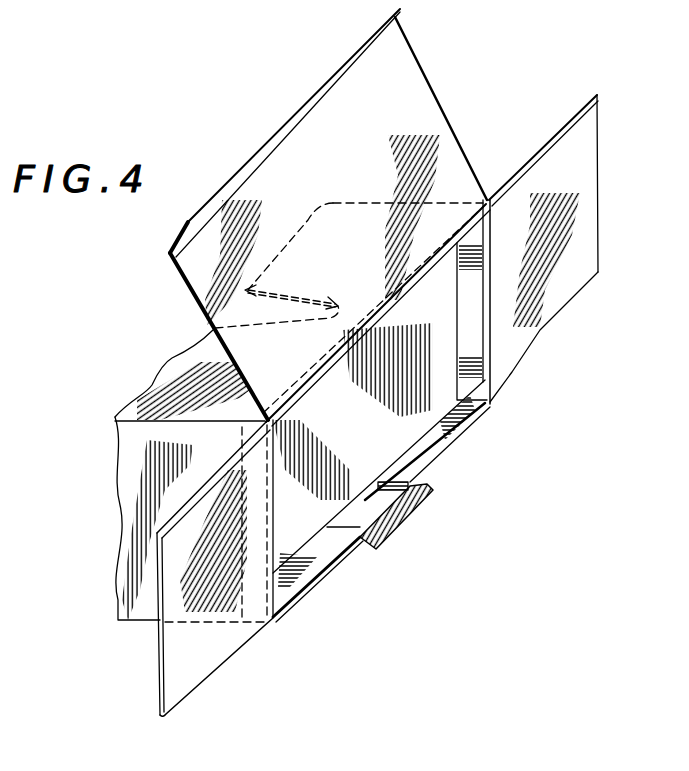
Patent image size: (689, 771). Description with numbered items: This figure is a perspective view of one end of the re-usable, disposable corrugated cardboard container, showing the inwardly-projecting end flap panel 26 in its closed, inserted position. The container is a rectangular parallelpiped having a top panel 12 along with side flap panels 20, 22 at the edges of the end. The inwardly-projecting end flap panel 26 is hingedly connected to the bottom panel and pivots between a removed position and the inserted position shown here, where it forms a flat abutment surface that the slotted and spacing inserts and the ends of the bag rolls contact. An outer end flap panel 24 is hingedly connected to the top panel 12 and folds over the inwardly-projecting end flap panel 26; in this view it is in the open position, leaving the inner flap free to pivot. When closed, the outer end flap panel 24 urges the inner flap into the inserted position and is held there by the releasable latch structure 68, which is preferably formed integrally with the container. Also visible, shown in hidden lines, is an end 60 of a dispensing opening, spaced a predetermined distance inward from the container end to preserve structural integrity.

The top panel 12 is at (180, 367).
The side flap panel 20 is at (167, 513).
The side flap panel 22 is at (546, 133).
The outer end flap panel 24 is at (427, 97).
The inwardly-projecting end flap panel 26 is at (437, 357).
The end of dispensing opening 60 is at (334, 302).
The releasable latch structure 68 is at (408, 514).